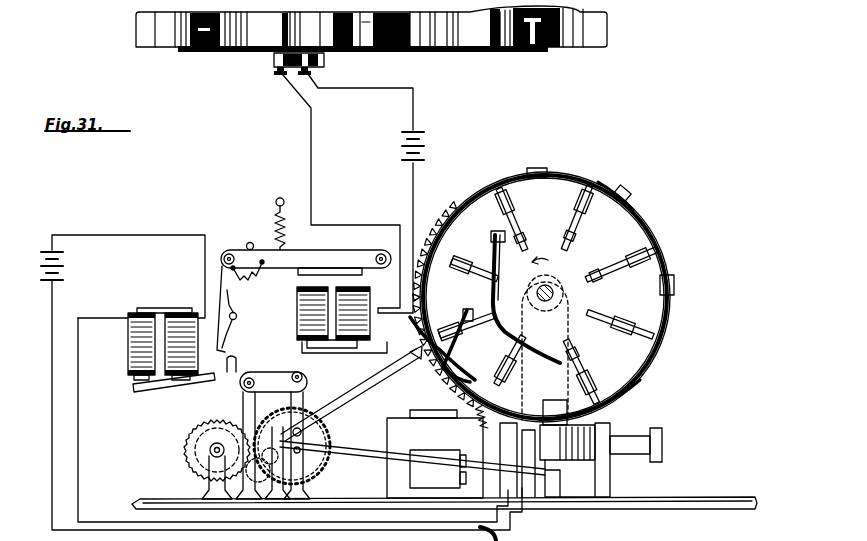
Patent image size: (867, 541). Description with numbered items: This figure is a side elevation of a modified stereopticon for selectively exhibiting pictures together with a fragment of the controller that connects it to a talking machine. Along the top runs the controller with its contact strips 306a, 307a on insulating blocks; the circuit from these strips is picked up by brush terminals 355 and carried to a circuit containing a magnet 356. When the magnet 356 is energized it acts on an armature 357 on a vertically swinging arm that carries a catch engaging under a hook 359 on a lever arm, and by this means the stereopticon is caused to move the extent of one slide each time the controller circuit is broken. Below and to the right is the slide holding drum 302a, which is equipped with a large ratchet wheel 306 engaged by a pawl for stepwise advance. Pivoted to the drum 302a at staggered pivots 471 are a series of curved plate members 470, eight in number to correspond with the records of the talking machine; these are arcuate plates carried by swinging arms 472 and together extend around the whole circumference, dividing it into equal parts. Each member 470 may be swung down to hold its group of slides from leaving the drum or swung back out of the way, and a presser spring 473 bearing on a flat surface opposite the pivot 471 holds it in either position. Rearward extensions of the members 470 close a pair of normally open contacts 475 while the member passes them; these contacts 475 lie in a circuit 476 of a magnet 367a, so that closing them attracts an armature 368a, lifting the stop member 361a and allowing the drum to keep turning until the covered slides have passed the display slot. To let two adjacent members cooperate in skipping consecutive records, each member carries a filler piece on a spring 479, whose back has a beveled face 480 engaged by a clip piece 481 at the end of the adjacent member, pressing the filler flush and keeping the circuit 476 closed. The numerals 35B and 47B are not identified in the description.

The ratchet wheel 306 is at (458, 206).
The contact strip 306a is at (528, 49).
The contact strip 307a is at (512, 48).
The brush terminals 355 is at (312, 70).
The magnet 356 is at (302, 300).
The armature 357 is at (338, 266).
The lever link 35B is at (226, 340).
The hook 359 is at (236, 356).
The stop member 361a is at (212, 409).
The magnet 367a is at (136, 313).
The armature 368a is at (166, 392).
The curved plate members 470 is at (581, 178).
The pivot 471 is at (635, 248).
The swinging arms 472 is at (600, 183).
The presser spring 473 is at (556, 230).
The contacts 475 is at (562, 420).
The circuit 476 is at (52, 467).
The spring 479 is at (667, 268).
The beveled face 480 is at (670, 286).
The clip piece 481 is at (633, 381).
The rim contact 47B is at (624, 193).
The slide holding drum 302a is at (612, 230).